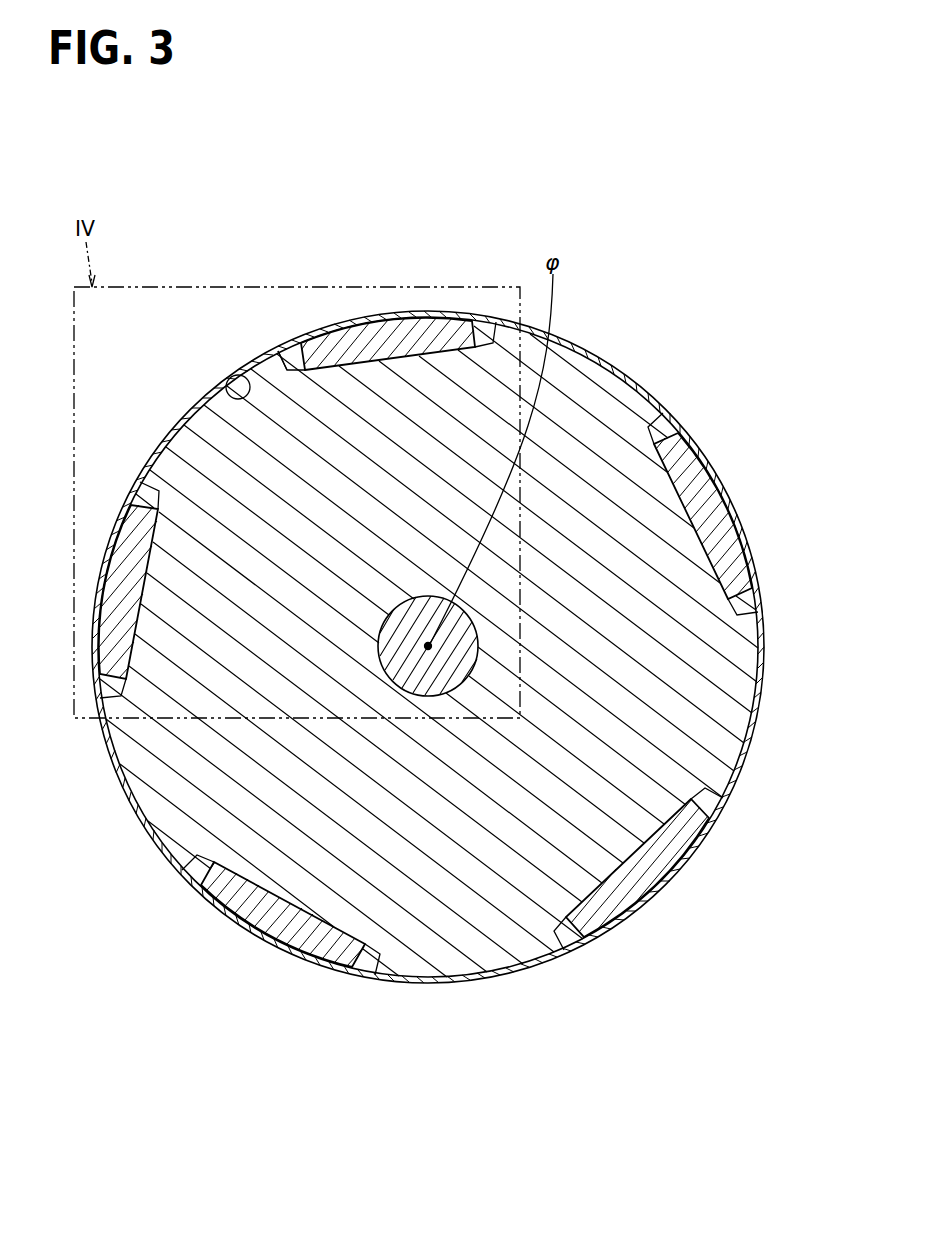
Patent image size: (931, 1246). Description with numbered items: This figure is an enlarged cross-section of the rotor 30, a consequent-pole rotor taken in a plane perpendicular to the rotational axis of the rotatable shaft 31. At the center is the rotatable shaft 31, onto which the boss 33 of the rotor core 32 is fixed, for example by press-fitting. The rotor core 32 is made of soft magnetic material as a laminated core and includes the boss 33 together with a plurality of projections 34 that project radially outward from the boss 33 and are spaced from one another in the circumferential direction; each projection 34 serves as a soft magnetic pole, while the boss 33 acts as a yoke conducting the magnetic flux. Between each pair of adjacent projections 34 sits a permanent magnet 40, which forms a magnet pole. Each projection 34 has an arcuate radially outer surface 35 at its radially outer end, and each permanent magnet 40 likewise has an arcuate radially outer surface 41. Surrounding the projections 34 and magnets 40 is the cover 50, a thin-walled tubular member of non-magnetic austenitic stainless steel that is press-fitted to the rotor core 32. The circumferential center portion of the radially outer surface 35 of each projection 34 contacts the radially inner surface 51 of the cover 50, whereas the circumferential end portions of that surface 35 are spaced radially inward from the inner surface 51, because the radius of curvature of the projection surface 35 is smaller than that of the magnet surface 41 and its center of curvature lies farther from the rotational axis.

The rotor 30 is at (150, 460).
The rotatable shaft 31 is at (462, 648).
The rotor core 32 is at (457, 686).
The boss 33 is at (553, 542).
The projection 34 is at (593, 374).
The radially outer surface of the projection 35 is at (591, 358).
The permanent magnet 40 is at (436, 330).
The radially outer surface of the permanent magnet 41 is at (384, 318).
The cover 50 is at (284, 347).
The radially inner surface of the cover 51 is at (247, 375).